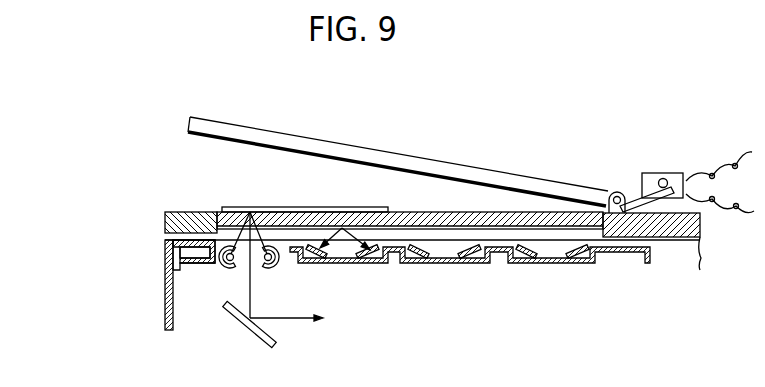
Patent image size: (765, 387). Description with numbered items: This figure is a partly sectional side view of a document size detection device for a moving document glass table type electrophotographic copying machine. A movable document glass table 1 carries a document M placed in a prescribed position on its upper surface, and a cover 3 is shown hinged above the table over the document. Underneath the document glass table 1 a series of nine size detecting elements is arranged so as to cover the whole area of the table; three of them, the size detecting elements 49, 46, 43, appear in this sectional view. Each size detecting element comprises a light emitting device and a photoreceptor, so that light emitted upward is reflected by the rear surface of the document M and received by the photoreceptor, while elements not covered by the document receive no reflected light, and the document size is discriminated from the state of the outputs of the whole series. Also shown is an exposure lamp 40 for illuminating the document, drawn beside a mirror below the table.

The cover 3 is at (332, 141).
The movable document glass table 1 is at (460, 213).
The document M is at (298, 207).
The exposure lamp 40 is at (243, 267).
The size detecting element 49 is at (343, 252).
The size detecting element 46 is at (443, 252).
The size detecting element 43 is at (548, 252).